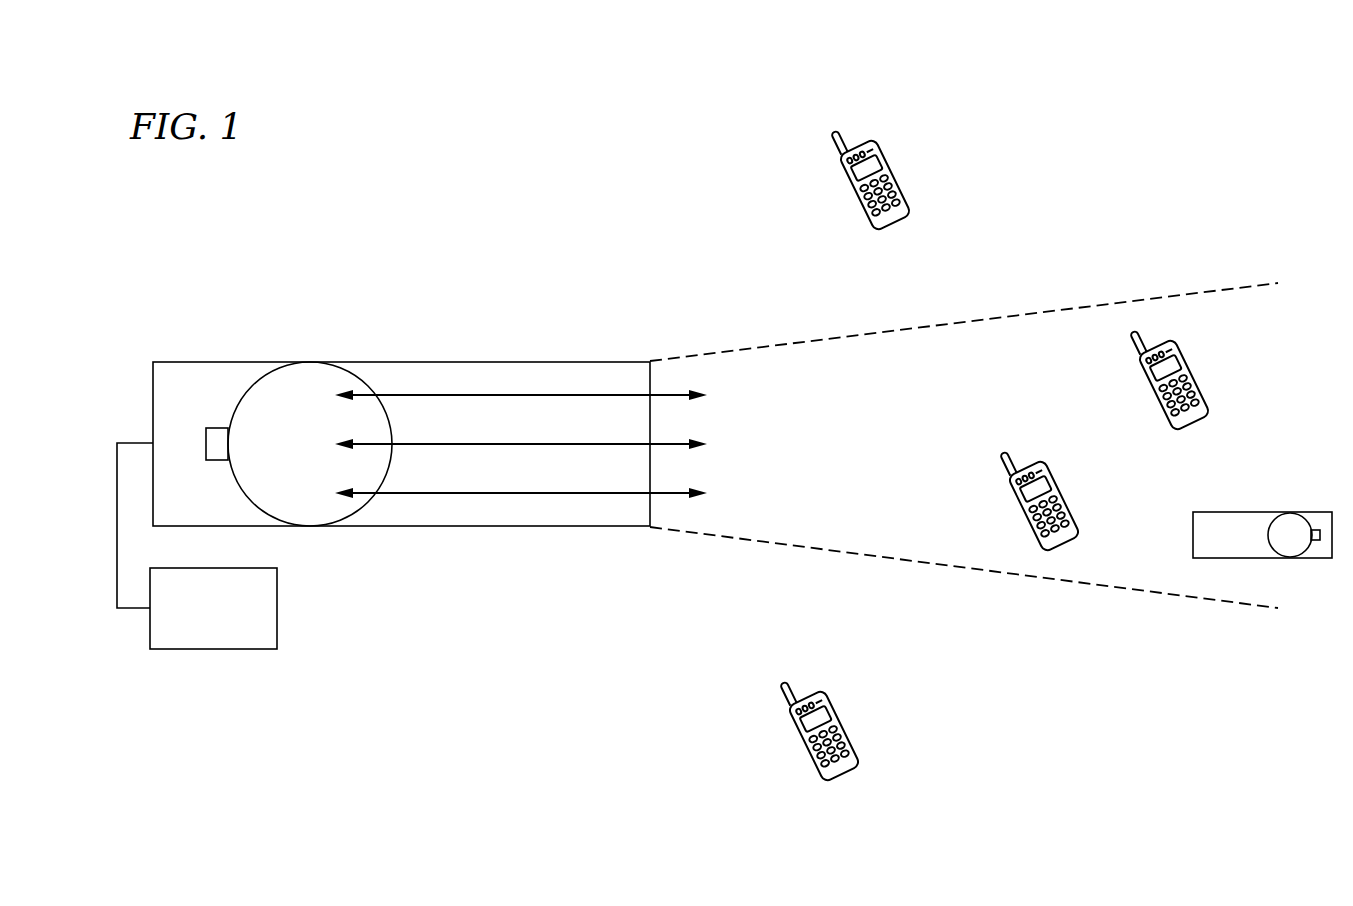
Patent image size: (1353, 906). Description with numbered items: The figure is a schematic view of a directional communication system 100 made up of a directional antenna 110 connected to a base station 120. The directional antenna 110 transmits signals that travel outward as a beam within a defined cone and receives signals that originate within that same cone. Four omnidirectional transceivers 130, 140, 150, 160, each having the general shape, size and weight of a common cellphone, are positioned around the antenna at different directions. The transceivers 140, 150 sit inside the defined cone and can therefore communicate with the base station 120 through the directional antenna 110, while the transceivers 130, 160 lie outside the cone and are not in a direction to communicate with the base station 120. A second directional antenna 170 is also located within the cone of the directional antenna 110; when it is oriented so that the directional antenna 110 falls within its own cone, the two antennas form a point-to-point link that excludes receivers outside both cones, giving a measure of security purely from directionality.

The directional communication system 100 is at (340, 678).
The directional antenna 110 is at (551, 361).
The base station 120 is at (279, 603).
The transceiver 130 is at (898, 162).
The transceiver 140 is at (1192, 362).
The transceiver 150 is at (1062, 483).
The transceiver 160 is at (844, 716).
The second directional antenna 170 is at (1254, 511).